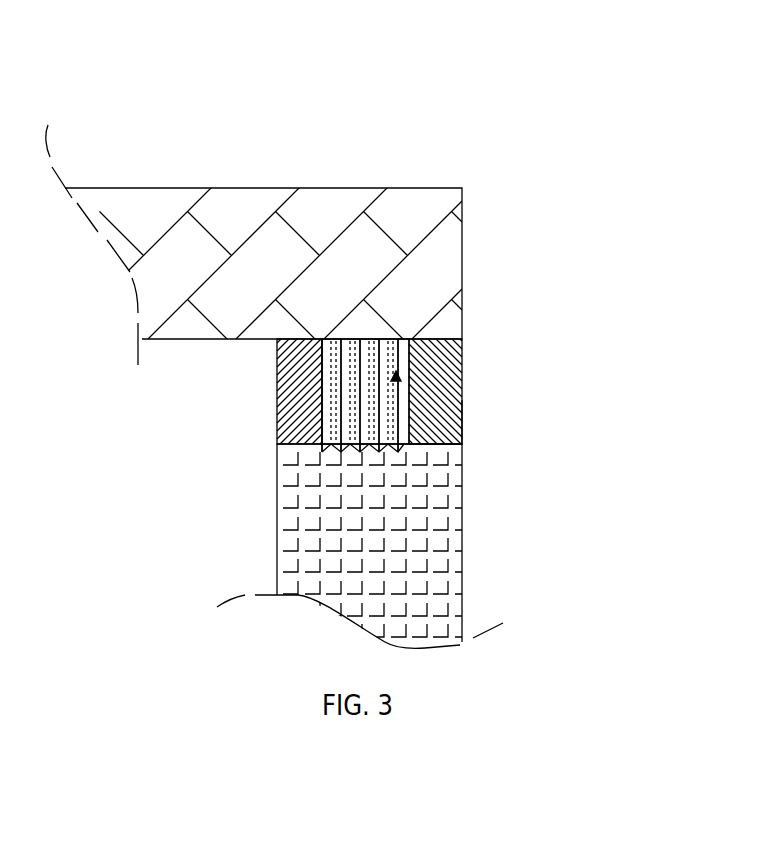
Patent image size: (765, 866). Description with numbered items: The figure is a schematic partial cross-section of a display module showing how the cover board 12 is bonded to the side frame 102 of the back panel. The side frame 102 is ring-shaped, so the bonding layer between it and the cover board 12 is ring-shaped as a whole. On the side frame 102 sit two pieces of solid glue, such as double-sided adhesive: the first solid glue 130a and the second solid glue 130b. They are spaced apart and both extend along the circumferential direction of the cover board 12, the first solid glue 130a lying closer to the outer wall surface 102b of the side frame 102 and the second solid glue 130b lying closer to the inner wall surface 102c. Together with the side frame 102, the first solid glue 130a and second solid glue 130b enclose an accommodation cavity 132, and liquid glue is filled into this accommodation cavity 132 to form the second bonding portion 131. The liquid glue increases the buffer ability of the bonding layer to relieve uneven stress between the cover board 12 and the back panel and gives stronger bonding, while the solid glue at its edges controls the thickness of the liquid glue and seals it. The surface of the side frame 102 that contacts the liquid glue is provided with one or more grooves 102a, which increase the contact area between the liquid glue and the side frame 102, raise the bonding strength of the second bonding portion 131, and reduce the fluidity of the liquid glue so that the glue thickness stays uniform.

The cover board 12 is at (326, 217).
The first solid glue 130a is at (450, 358).
The second solid glue 130b is at (287, 405).
The second bonding portion 131 is at (393, 415).
The accommodation cavity 132 is at (412, 352).
The side frame 102 is at (443, 547).
The grooves 102a is at (323, 453).
The outer wall surface 102b is at (463, 492).
The inner wall surface 102c is at (278, 542).